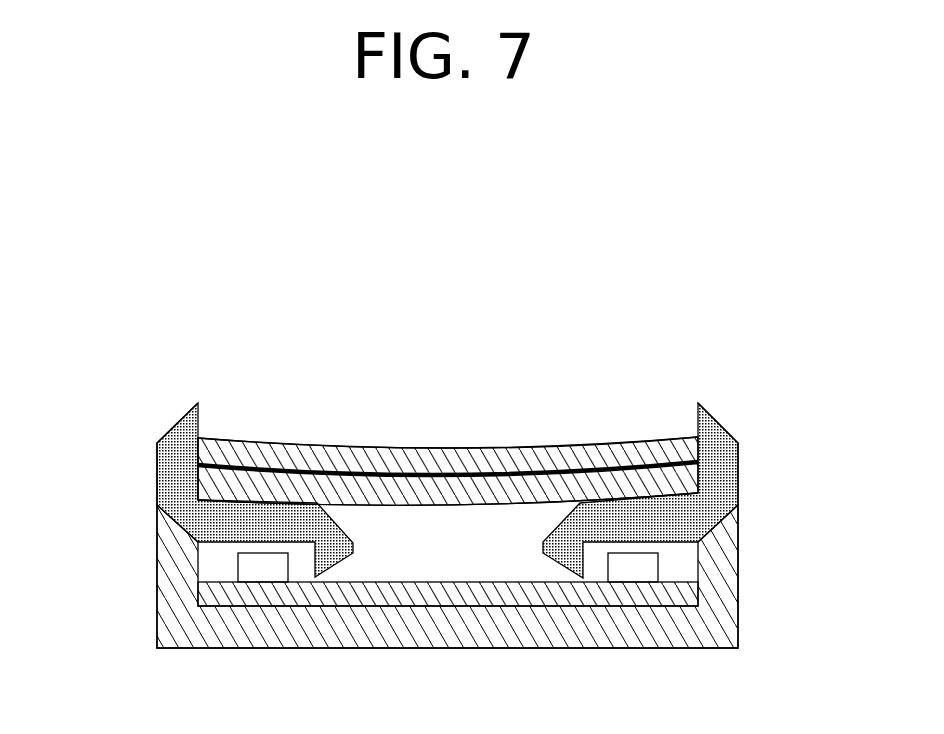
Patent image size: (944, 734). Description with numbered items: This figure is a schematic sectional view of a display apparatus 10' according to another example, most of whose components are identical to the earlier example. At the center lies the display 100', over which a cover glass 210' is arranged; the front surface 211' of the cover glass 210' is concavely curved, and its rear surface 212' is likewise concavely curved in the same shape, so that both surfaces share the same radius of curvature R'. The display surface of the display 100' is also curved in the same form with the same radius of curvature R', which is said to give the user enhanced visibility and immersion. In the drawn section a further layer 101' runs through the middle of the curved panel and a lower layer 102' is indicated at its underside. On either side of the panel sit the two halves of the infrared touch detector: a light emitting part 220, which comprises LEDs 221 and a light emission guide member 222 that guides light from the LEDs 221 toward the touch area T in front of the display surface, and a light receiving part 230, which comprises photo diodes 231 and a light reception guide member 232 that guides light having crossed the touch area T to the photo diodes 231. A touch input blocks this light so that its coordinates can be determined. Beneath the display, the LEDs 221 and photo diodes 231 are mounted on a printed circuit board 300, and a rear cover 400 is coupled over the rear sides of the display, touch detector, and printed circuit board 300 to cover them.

The display apparatus 10' is at (447, 427).
The display 100' is at (448, 437).
The sensing layer 101' is at (448, 423).
The lower layer of display panel 102' is at (448, 438).
The cover glass 210' is at (541, 412).
The front surface 211' is at (323, 408).
The rear surface 212' is at (258, 434).
The light emitting part 220 is at (185, 493).
The LEDs 221 is at (250, 567).
The light emission guide member 222 is at (177, 473).
The light receiving part 230 is at (711, 493).
The photo diodes 231 is at (645, 567).
The light reception guide member 232 is at (718, 473).
The printed circuit board 300 is at (400, 593).
The rear cover 400 is at (475, 615).
The radius of curvature R' is at (301, 353).
The touch area T is at (440, 420).